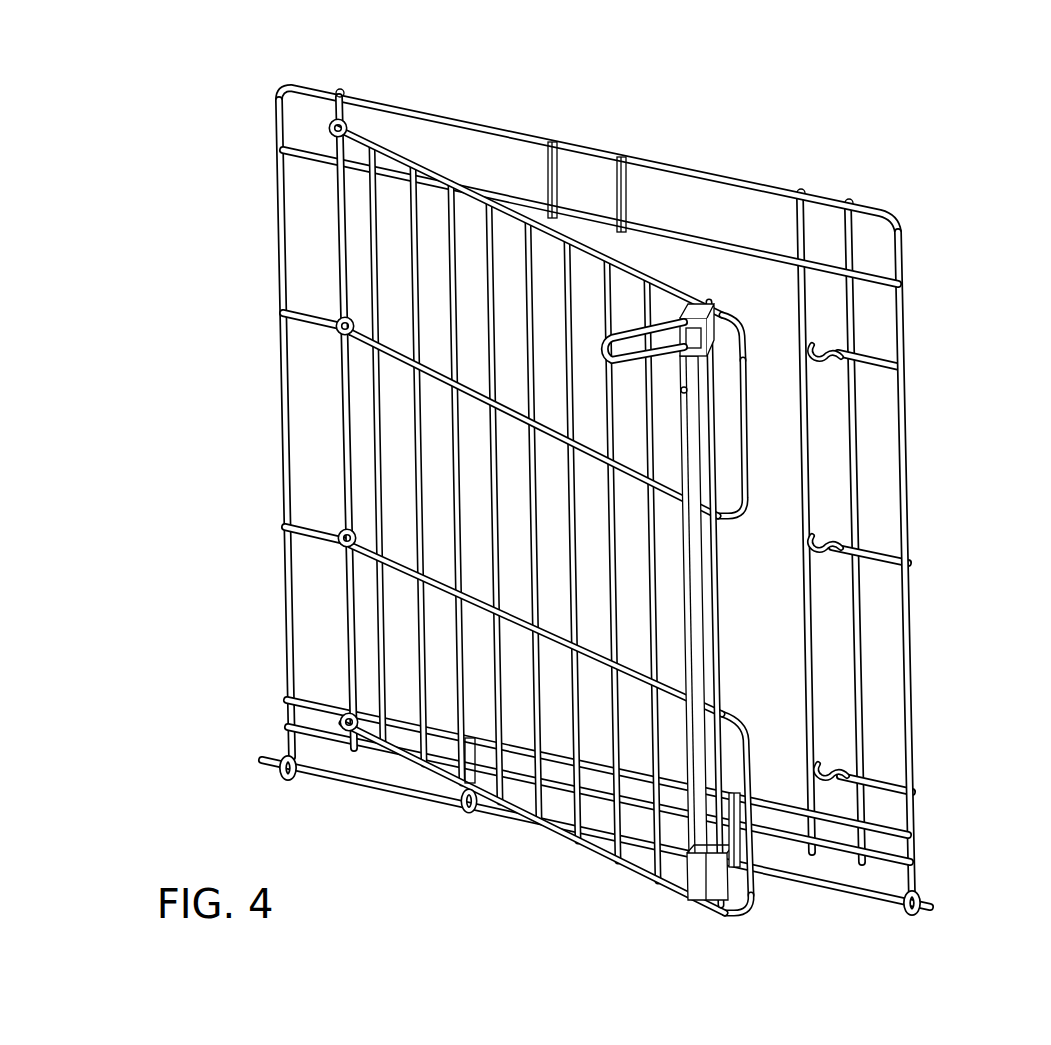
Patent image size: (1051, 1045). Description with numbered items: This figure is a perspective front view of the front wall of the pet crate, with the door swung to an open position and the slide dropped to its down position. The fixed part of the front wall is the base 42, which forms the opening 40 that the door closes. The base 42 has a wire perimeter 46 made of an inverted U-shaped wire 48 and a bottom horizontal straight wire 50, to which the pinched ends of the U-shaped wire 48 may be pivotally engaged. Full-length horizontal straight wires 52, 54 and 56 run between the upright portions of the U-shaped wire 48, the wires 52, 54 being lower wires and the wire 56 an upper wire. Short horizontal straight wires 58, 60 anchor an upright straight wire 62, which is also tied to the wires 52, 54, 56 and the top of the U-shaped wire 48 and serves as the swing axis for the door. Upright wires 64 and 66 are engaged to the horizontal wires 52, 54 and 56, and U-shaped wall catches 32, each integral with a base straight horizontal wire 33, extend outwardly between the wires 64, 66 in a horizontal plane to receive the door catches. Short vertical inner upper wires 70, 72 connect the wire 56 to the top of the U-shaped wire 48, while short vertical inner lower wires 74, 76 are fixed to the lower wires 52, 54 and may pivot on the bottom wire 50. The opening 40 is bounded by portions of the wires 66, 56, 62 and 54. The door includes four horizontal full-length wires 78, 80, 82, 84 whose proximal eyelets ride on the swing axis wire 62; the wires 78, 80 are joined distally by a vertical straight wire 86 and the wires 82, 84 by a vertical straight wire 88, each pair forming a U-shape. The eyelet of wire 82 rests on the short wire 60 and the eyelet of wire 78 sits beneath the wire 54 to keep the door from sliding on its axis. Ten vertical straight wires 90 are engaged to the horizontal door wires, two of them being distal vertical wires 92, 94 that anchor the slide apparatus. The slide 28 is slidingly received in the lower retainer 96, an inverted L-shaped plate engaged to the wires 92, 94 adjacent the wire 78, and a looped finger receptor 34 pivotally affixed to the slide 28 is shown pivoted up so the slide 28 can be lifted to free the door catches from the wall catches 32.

The slide 28 is at (700, 898).
The wall catches 32 is at (828, 366).
The base straight horizontal wire 33 is at (876, 352).
The finger receptor 34 is at (630, 312).
The opening 40 is at (780, 645).
The base 42 is at (915, 452).
The wire perimeter 46 is at (830, 188).
The inverted U-shaped wire 48 is at (315, 84).
The bottom horizontal straight wire 50 is at (355, 792).
The lower horizontal straight wire 52 is at (295, 782).
The lower horizontal straight wire 54 is at (328, 702).
The upper horizontal straight wire 56 is at (302, 150).
The short horizontal straight wire 58 is at (330, 547).
The short horizontal straight wire 60 is at (312, 312).
The upright straight wire 62 is at (330, 186).
The upright wire 64 is at (865, 505).
The upright wire 66 is at (870, 806).
The short vertical inner upper wire 70 is at (548, 200).
The short vertical inner upper wire 72 is at (622, 215).
The short vertical inner lower wire 74 is at (480, 770).
The short vertical inner lower wire 76 is at (745, 842).
The horizontally extending full length straight wire 78 is at (600, 852).
The horizontally extending full length straight wire 80 is at (400, 548).
The horizontally extending full length straight wire 82 is at (333, 340).
The horizontally extending full length straight wire 84 is at (418, 213).
The vertical straight wire 86 is at (758, 897).
The vertical straight wire 88 is at (748, 335).
The vertical straight full length wires 90 is at (452, 185).
The distal straight vertical wire 92 is at (712, 318).
The distal straight vertical wire 94 is at (728, 330).
The lower retainer 96 is at (690, 856).